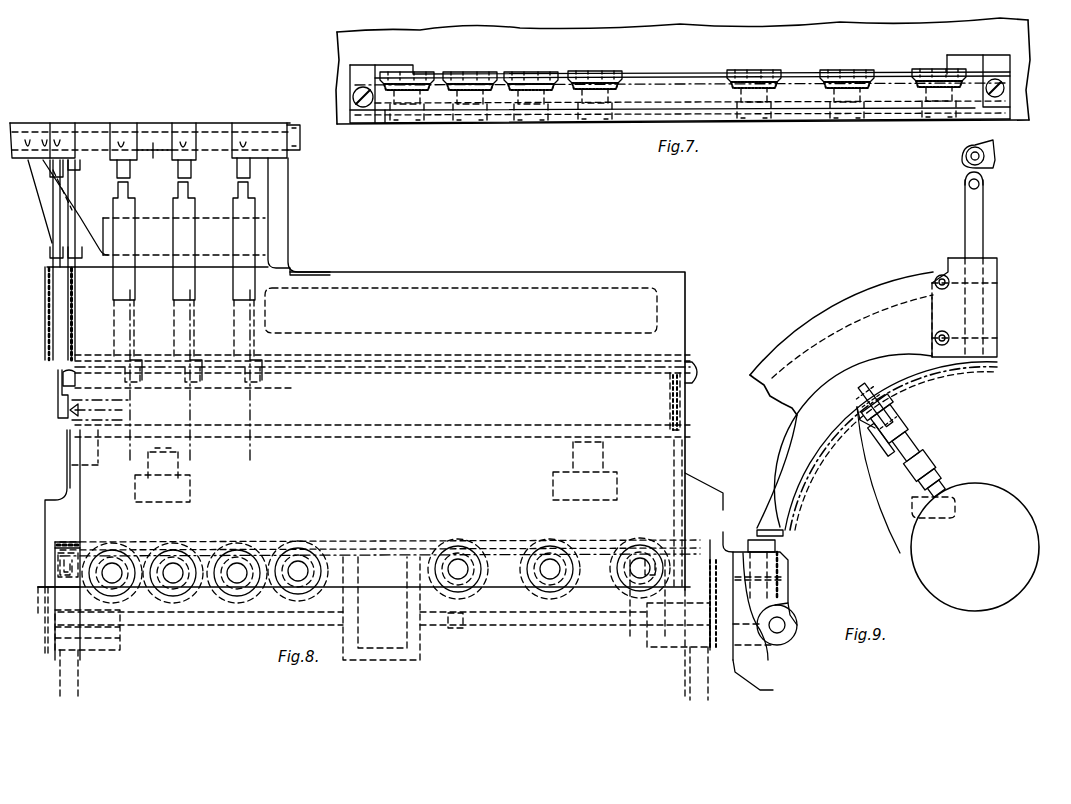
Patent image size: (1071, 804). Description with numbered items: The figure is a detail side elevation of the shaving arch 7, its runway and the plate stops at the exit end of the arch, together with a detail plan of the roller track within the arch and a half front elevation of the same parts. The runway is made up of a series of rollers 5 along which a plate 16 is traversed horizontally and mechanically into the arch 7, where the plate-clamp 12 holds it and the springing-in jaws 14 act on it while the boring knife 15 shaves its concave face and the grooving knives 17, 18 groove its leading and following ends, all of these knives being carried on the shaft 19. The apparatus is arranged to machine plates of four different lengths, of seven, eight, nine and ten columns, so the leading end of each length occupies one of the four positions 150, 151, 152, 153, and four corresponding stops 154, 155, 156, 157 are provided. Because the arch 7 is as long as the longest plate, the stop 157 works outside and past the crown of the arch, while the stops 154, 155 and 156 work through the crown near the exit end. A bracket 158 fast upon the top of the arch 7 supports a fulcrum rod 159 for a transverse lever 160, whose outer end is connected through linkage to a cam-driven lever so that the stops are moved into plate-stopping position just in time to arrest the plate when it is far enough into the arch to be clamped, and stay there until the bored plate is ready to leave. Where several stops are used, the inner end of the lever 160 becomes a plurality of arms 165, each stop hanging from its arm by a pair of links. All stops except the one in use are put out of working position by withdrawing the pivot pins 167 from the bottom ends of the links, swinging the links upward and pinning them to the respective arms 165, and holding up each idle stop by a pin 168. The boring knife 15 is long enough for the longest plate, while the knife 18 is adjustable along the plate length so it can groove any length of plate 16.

In FIG. 7, the series of rollers 5 is at (530, 72).
In FIG. 8, the series of rollers 5 is at (157, 550).
In FIG. 9, the series of rollers 5 is at (783, 567).
In FIG. 8, the shaving arch 7 is at (480, 272).
In FIG. 9, the shaving arch 7 is at (852, 303).
In FIG. 8, the plate-clamp 12 is at (182, 604).
In FIG. 9, the plate-clamp 12 is at (753, 607).
In FIG. 9, the springing-in jaws 14 is at (778, 545).
In FIG. 9, the boring knife 15 is at (885, 395).
In FIG. 8, the plate 16 is at (480, 368).
In FIG. 9, the plate 16 is at (800, 474).
In FIG. 8, the grooving knife 17 is at (694, 370).
In FIG. 9, the grooving knife 17 is at (868, 400).
In FIG. 8, the grooving knife 18 is at (58, 393).
In FIG. 9, the shaft 19 is at (975, 547).
In FIG. 8, the leading-end position 150 is at (250, 404).
In FIG. 8, the leading-end position 151 is at (190, 410).
In FIG. 8, the leading-end position 152 is at (130, 412).
In FIG. 8, the leading-end position 153 is at (70, 452).
In FIG. 8, the stop 154 is at (240, 226).
In FIG. 9, the stop 154 is at (968, 228).
In FIG. 8, the stop 155 is at (180, 230).
In FIG. 8, the stop 156 is at (118, 240).
In FIG. 8, the stop 157 is at (62, 377).
In FIG. 8, the bracket 158 is at (282, 240).
In FIG. 8, the fulcrum rod 159 is at (154, 158).
In FIG. 8, the transverse lever 160 is at (74, 128).
In FIG. 8, the arms 165 is at (134, 128).
In FIG. 8, the pivot pins 167 is at (55, 253).
In FIG. 8, the pin 168 is at (60, 208).